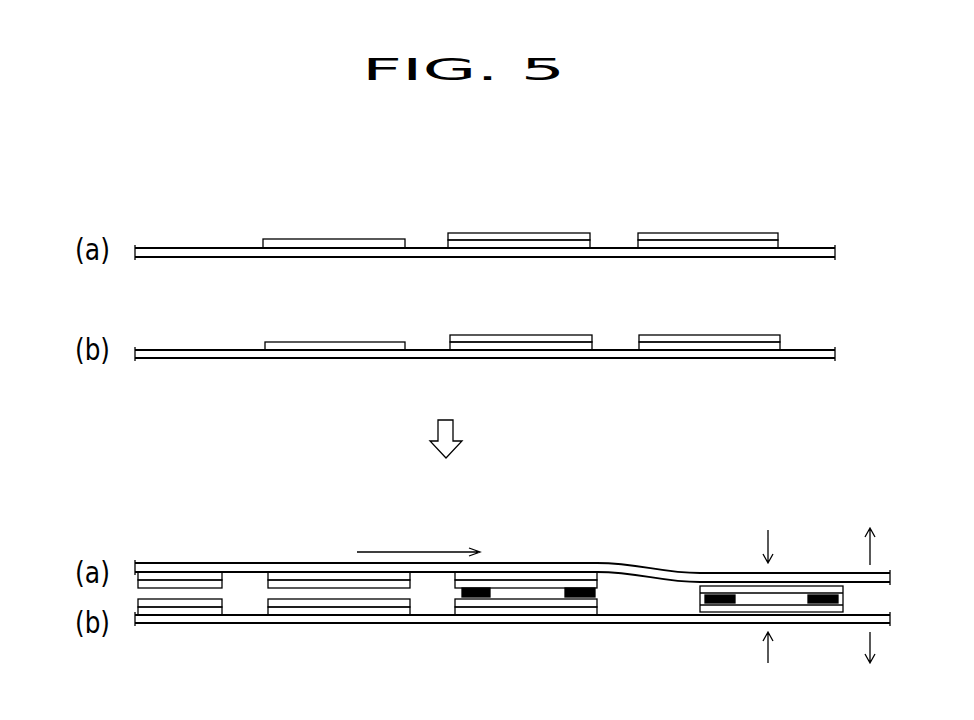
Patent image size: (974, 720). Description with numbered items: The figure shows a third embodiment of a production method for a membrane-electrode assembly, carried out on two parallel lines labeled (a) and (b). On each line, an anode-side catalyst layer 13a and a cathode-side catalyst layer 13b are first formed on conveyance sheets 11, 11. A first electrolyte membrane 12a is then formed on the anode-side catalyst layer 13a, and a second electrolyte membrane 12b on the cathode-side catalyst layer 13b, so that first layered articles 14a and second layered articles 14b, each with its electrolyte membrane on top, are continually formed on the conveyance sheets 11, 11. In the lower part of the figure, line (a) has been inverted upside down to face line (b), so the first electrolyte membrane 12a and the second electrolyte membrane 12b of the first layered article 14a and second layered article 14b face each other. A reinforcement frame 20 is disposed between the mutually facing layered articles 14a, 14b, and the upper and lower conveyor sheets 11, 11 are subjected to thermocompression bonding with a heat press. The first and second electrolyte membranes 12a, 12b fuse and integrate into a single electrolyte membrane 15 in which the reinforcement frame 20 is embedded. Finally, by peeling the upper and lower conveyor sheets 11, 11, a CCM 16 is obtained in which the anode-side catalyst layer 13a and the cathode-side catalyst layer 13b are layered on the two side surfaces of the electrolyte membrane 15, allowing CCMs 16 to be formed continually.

The conveyance sheet 11 is at (184, 248).
The first electrolyte membrane 12a is at (525, 243).
The second electrolyte membrane 12b is at (555, 345).
The anode-side catalyst layer 13a is at (300, 240).
The cathode-side catalyst layer 13b is at (307, 342).
The first layered article 14a is at (595, 218).
The second layered article 14b is at (518, 322).
The electrolyte membrane 15 is at (795, 600).
The CCM 16 is at (860, 609).
The reinforcement frame 20 is at (485, 626).